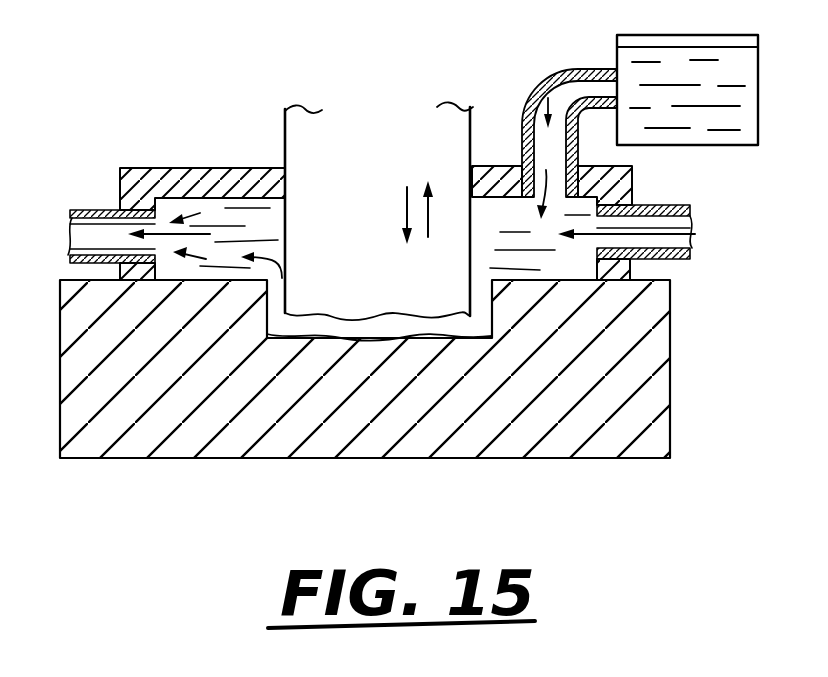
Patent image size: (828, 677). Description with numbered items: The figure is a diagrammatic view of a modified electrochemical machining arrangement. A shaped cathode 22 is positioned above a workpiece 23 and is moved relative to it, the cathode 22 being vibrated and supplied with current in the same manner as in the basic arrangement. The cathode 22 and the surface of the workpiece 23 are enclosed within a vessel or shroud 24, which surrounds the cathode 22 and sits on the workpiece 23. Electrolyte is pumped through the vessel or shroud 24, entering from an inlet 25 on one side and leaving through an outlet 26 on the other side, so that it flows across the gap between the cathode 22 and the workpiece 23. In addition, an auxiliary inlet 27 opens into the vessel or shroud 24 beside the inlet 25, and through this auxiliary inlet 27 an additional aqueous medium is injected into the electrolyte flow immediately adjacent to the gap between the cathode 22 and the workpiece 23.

The shaped cathode 22 is at (302, 141).
The workpiece 23 is at (650, 384).
The vessel or shroud 24 is at (168, 178).
The inlet 25 is at (672, 203).
The outlet 26 is at (85, 210).
The auxiliary inlet 27 is at (540, 80).